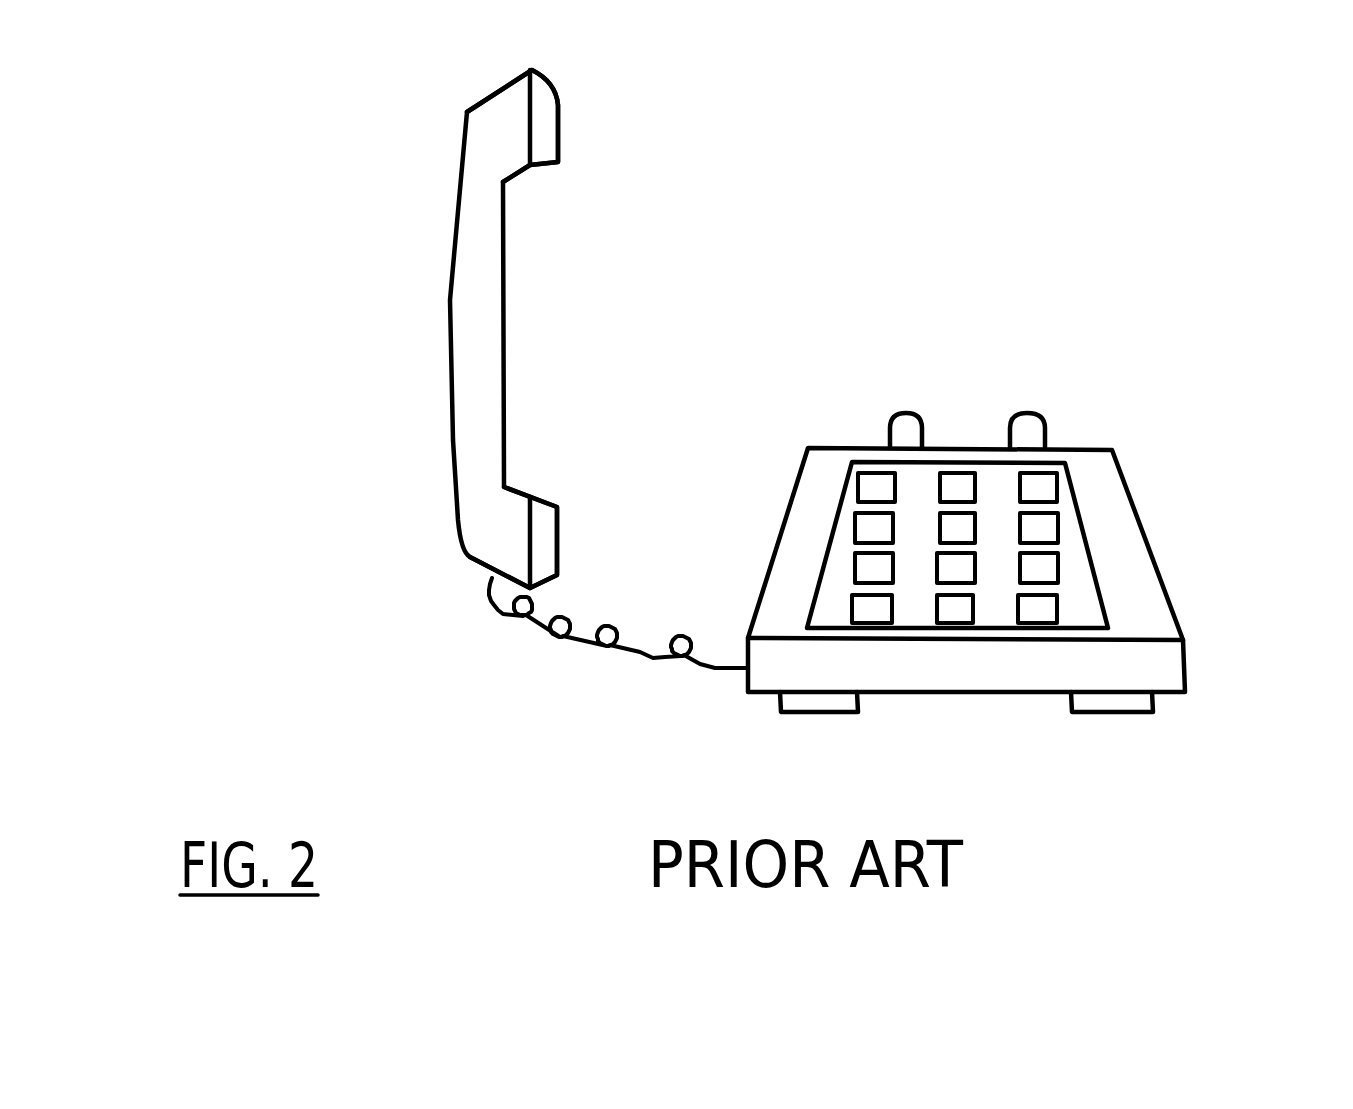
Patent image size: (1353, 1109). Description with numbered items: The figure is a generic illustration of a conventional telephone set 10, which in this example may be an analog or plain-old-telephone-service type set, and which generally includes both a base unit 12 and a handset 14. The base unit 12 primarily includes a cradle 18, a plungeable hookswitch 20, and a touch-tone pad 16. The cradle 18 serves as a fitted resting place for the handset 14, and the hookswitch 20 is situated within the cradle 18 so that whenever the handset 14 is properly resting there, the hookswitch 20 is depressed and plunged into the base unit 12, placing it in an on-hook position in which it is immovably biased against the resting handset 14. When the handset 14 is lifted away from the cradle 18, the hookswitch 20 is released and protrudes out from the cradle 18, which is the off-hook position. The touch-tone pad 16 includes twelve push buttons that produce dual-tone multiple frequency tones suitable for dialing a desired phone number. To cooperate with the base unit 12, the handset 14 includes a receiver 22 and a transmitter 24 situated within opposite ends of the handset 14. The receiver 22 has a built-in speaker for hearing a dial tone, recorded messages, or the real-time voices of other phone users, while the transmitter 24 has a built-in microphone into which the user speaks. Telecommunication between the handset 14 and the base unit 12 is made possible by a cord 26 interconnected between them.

The conventional telephone set 10 is at (1174, 184).
The base unit 12 is at (972, 668).
The handset 14 is at (463, 342).
The touch-tone pad 16 is at (1070, 562).
The cradle 18 is at (1100, 420).
The plungeable hookswitch 20 is at (903, 430).
The receiver 22 is at (571, 120).
The transmitter 24 is at (575, 546).
The cord 26 is at (620, 663).